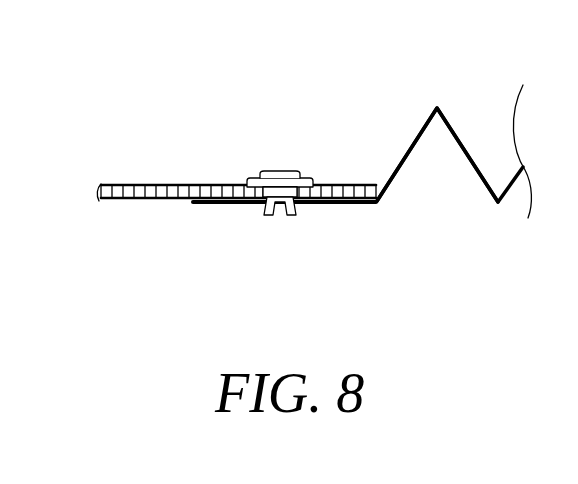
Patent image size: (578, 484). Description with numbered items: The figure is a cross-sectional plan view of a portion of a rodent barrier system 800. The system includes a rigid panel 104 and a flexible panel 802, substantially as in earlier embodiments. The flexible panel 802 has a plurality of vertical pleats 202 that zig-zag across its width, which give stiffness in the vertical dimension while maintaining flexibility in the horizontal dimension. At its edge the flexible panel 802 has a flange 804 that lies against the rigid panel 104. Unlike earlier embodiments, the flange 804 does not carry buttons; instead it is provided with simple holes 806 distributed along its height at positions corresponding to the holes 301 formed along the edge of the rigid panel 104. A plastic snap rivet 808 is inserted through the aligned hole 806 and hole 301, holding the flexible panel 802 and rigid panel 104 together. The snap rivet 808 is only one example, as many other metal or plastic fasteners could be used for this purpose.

The rodent barrier system 800 is at (100, 83).
The rigid panel 104 is at (158, 185).
The flange 804 is at (223, 203).
The flexible panel 802 is at (413, 142).
The pleat 202 is at (458, 142).
The hole 806 is at (288, 171).
The hole 301 is at (262, 197).
The plastic snap rivet 808 is at (292, 203).